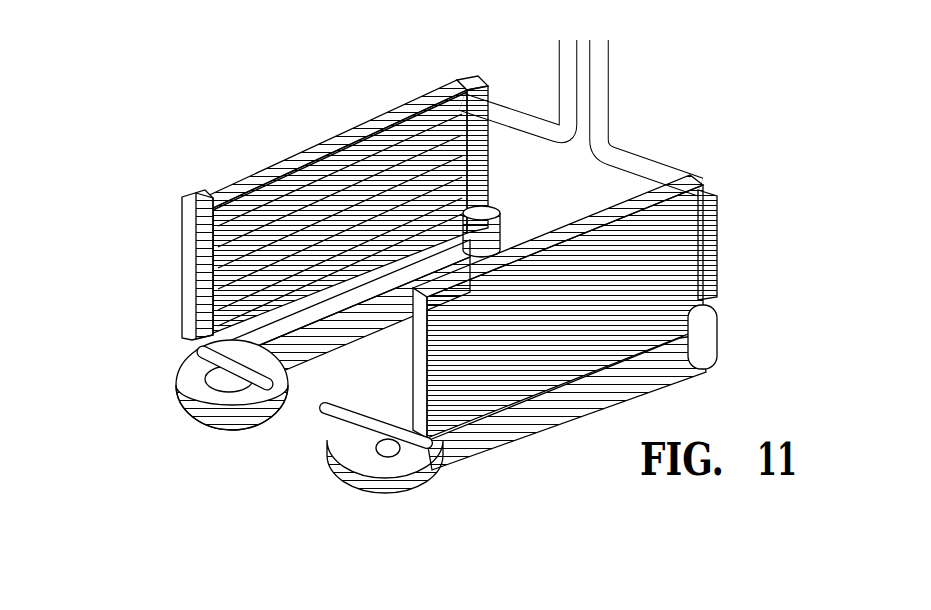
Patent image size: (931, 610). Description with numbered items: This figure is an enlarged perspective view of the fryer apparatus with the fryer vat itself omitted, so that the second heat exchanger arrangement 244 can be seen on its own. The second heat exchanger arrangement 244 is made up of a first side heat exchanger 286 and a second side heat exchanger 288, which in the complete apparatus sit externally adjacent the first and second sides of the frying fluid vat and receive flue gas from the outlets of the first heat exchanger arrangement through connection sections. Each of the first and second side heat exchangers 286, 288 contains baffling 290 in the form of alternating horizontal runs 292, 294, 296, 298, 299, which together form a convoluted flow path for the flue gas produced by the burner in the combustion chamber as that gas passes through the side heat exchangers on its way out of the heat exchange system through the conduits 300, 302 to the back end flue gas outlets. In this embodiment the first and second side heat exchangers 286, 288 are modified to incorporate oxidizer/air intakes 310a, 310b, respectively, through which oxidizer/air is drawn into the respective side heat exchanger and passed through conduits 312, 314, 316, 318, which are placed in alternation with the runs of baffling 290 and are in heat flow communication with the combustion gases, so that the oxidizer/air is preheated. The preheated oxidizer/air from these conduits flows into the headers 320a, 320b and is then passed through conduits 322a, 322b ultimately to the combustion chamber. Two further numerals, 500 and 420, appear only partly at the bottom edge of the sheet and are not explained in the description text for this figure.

The second heat exchanger arrangement 244 is at (614, 336).
The first side heat exchanger 286 is at (367, 120).
The second side heat exchanger 288 is at (645, 203).
The baffling 290 is at (320, 259).
The horizontal run 292 is at (262, 284).
The horizontal run 294 is at (228, 275).
The horizontal run 296 is at (330, 212).
The horizontal run 298 is at (362, 152).
The horizontal run 299 is at (348, 182).
The conduit 300 is at (508, 103).
The conduit 302 is at (612, 92).
The oxidizer/air intake 310a is at (487, 168).
The oxidizer/air intake 310b is at (717, 218).
The conduit 312 is at (222, 296).
The conduit 314 is at (220, 258).
The conduit 316 is at (452, 150).
The conduit 318 is at (398, 150).
The header 320a is at (230, 435).
The header 320b is at (499, 431).
The conduit 322a is at (235, 379).
The conduit 322b is at (338, 420).
The assembly 500 is at (513, 598).
The assembly 420 is at (688, 605).